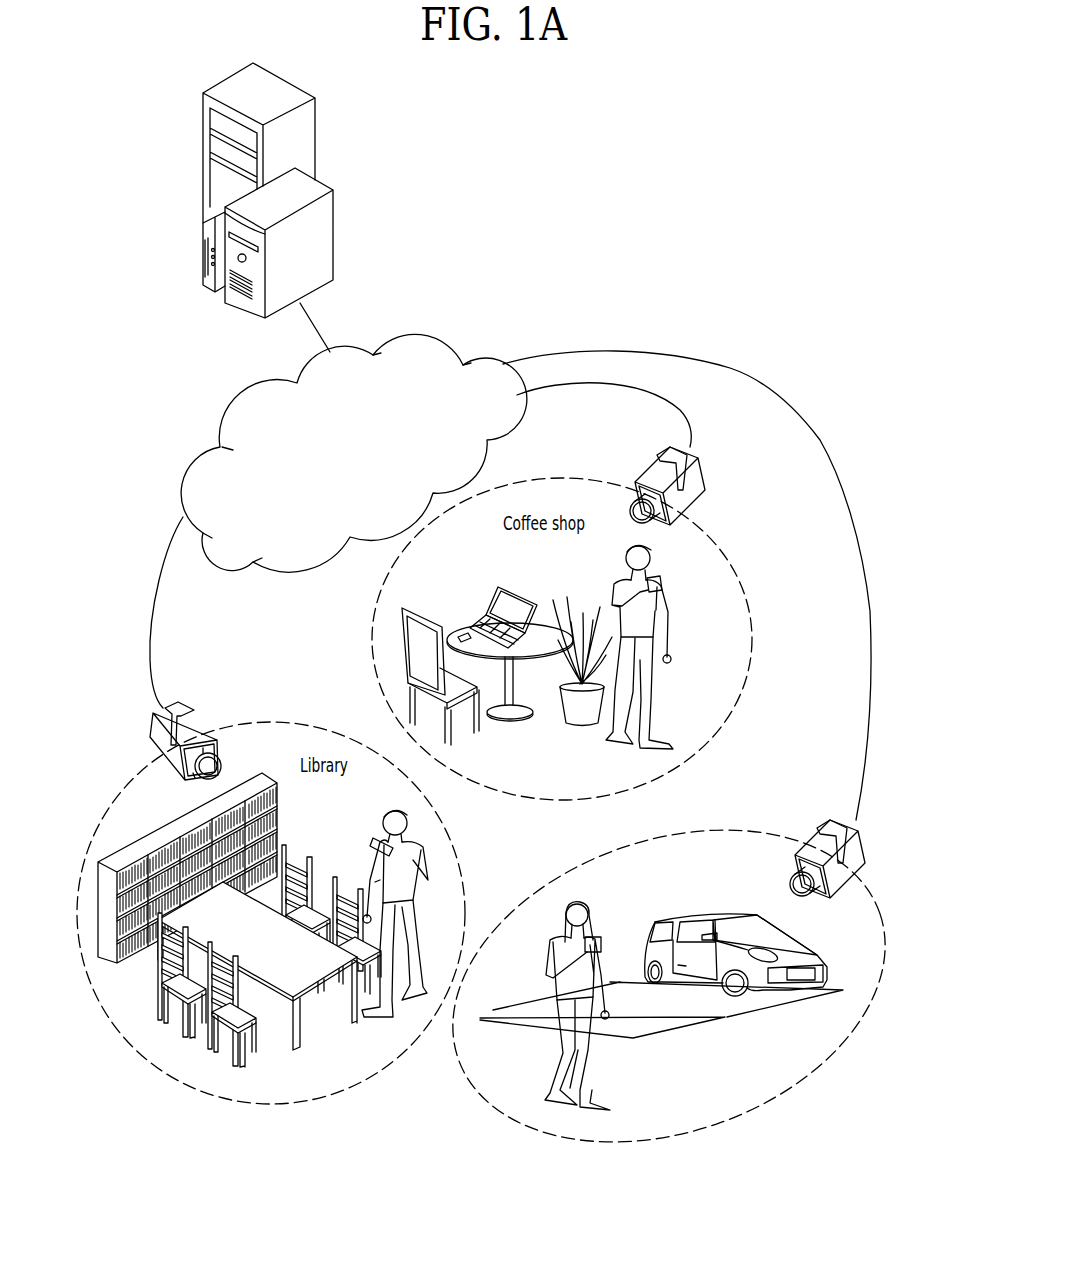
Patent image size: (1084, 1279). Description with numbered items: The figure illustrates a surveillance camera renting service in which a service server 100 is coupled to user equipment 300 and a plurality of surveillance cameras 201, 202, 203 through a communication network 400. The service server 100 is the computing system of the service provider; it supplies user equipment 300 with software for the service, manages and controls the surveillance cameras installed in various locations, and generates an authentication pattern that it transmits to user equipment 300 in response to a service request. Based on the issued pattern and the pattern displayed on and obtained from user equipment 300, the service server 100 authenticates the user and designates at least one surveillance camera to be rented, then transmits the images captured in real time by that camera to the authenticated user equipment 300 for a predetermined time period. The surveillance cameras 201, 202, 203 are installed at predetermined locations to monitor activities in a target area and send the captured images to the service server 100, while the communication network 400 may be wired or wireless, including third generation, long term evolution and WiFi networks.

The service server 100 is at (320, 181).
The communication network 400 is at (424, 336).
The surveillance camera 201 is at (702, 468).
The surveillance camera 202 is at (865, 848).
The surveillance camera 203 is at (158, 746).
The user equipment 300 is at (662, 578).